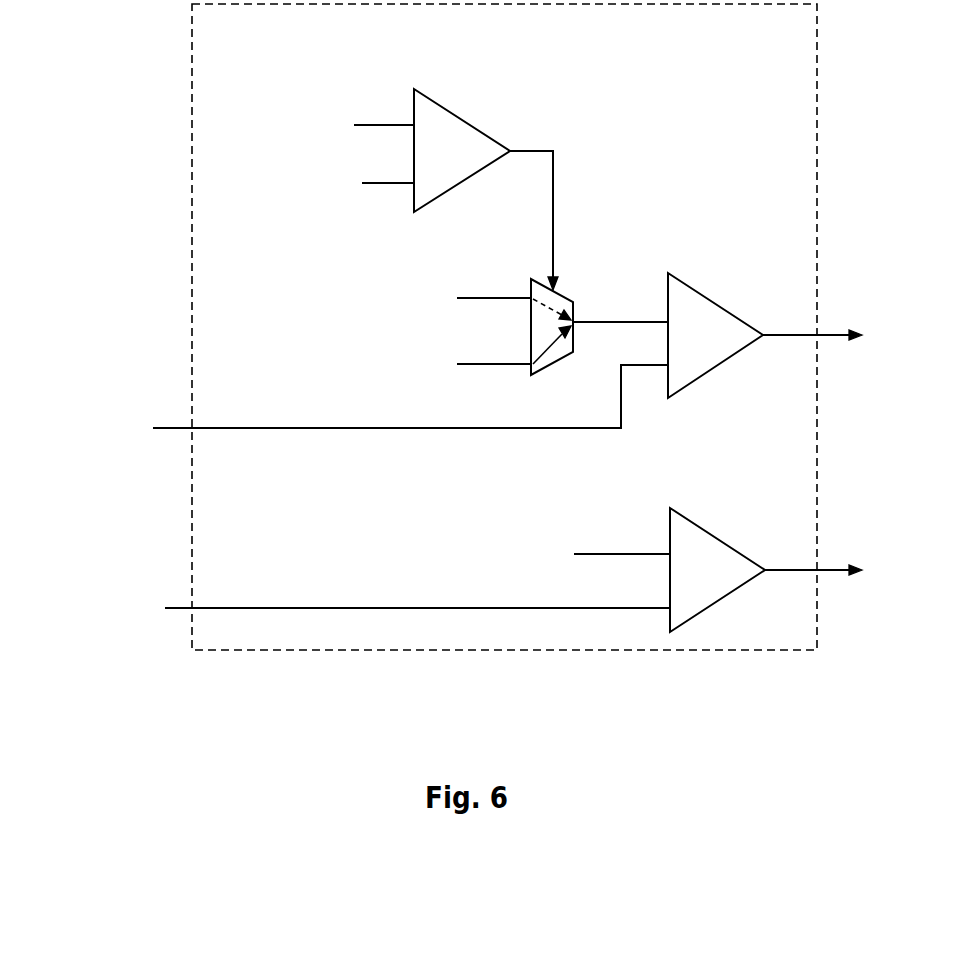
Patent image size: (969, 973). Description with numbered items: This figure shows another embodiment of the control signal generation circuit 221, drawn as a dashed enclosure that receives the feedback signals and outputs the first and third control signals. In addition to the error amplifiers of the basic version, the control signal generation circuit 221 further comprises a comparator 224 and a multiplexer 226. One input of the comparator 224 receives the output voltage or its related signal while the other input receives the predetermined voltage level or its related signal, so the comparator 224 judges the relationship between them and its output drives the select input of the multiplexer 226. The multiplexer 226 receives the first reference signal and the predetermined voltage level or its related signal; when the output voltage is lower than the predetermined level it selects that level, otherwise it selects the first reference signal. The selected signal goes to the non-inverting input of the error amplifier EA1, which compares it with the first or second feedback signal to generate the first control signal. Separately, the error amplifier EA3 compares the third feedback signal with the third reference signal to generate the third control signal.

The control signal generation circuit 221 is at (788, 38).
The comparator 224 is at (450, 107).
The multiplexer 226 is at (569, 300).
The error amplifier EA1 is at (703, 293).
The error amplifier EA3 is at (706, 528).